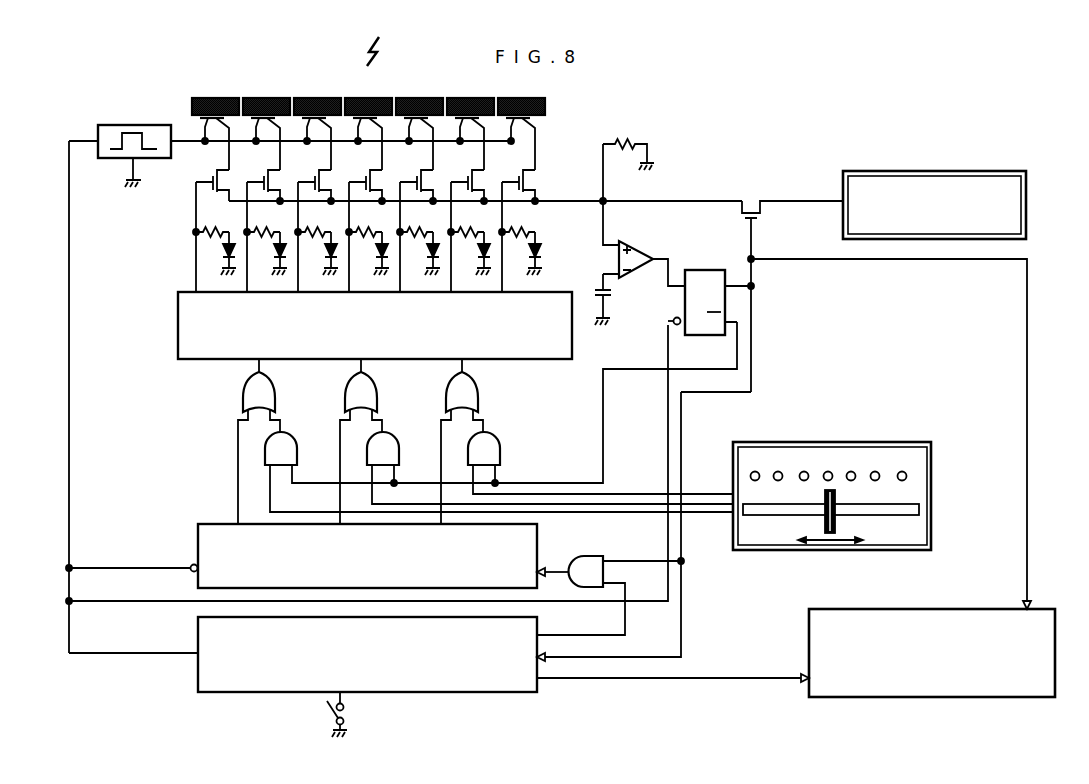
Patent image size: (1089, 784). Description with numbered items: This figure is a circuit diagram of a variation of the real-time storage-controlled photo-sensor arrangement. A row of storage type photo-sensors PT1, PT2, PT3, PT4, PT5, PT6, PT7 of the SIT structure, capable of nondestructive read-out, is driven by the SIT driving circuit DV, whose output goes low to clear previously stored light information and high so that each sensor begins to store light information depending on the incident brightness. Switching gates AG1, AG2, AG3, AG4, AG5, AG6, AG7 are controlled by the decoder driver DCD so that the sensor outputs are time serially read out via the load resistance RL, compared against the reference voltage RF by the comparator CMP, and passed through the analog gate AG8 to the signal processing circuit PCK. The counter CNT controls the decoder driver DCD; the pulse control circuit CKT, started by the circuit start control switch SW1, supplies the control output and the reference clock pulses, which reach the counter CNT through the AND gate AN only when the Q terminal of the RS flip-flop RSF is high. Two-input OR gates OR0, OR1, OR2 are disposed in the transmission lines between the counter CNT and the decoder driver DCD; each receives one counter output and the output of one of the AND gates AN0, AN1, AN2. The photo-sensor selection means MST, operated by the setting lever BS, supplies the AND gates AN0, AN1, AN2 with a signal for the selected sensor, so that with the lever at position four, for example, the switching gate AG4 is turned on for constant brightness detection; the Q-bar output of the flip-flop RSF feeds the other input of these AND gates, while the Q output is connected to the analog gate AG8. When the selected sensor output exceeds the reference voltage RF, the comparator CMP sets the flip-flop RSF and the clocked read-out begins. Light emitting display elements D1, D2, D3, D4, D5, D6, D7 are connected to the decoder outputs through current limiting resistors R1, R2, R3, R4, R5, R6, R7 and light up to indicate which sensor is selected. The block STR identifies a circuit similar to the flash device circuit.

The SIT driving circuit DV is at (133, 125).
The photo-sensor PT1 is at (504, 97).
The photo-sensor PT2 is at (504, 97).
The photo-sensor PT3 is at (419, 123).
The photo-sensor PT4 is at (368, 123).
The photo-sensor PT5 is at (317, 123).
The photo-sensor PT6 is at (266, 123).
The photo-sensor PT7 is at (215, 123).
The switching gate AG1 is at (518, 175).
The switching gate AG2 is at (467, 175).
The switching gate AG3 is at (416, 175).
The switching gate AG4 is at (365, 175).
The switching gate AG5 is at (314, 175).
The switching gate AG6 is at (263, 175).
The switching gate AG7 is at (211, 174).
The analog gate AG8 is at (754, 206).
The current limiting resistor R1 is at (531, 229).
The current limiting resistor R2 is at (467, 221).
The current limiting resistor R3 is at (416, 221).
The current limiting resistor R4 is at (365, 221).
The current limiting resistor R5 is at (314, 221).
The current limiting resistor R6 is at (263, 221).
The current limiting resistor R7 is at (212, 221).
The light emitting display element D1 is at (526, 240).
The light emitting display element D2 is at (475, 253).
The light emitting display element D3 is at (424, 253).
The light emitting display element D4 is at (373, 253).
The light emitting display element D5 is at (322, 253).
The light emitting display element D6 is at (271, 253).
The light emitting display element D7 is at (220, 253).
The decoder driver DCD is at (375, 325).
The OR gate OR0 is at (479, 388).
The OR gate OR1 is at (378, 388).
The OR gate OR2 is at (276, 388).
The AND gate AN0 is at (501, 436).
The AND gate AN1 is at (400, 436).
The AND gate AN2 is at (298, 436).
The AND gate AN is at (609, 595).
The counter CNT is at (364, 556).
The pulse control circuit CKT is at (367, 654).
The circuit start control switch SW1 is at (324, 713).
The load resistance RL is at (616, 140).
The reference voltage RF is at (598, 288).
The comparator CMP is at (641, 244).
The RS flip-flop RSF is at (705, 270).
The signal processing circuit PCK is at (934, 205).
The photo-sensor selection means MST is at (832, 470).
The setting lever BS is at (824, 520).
The flash device circuit STR is at (932, 653).